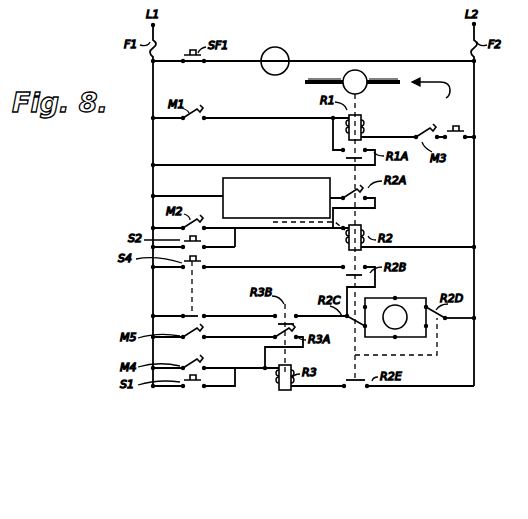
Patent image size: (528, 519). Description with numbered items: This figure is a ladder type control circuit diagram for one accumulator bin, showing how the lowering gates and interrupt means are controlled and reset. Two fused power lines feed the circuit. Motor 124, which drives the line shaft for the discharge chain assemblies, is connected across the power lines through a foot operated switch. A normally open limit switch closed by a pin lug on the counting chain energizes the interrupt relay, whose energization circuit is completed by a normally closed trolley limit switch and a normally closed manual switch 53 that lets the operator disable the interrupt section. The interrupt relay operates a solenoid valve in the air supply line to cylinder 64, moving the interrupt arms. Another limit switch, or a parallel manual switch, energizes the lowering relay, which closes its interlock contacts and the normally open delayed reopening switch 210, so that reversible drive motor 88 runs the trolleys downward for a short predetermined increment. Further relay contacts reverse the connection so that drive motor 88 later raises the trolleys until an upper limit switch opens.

The motor 124 is at (286, 58).
The cylinder 64 is at (380, 94).
The switch S3 53 is at (461, 142).
The delayed reopening switch 210 is at (222, 189).
The reversible drive motor 88 is at (397, 298).